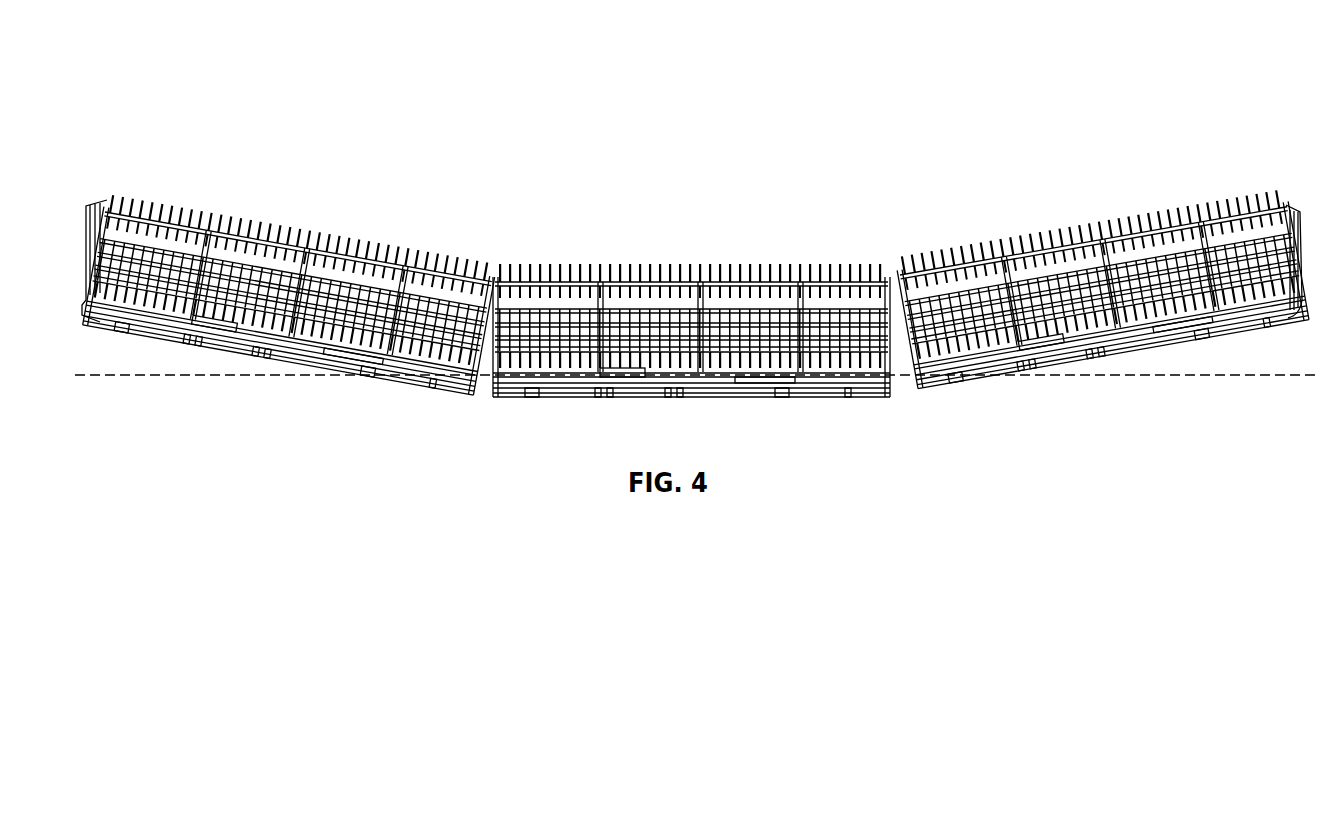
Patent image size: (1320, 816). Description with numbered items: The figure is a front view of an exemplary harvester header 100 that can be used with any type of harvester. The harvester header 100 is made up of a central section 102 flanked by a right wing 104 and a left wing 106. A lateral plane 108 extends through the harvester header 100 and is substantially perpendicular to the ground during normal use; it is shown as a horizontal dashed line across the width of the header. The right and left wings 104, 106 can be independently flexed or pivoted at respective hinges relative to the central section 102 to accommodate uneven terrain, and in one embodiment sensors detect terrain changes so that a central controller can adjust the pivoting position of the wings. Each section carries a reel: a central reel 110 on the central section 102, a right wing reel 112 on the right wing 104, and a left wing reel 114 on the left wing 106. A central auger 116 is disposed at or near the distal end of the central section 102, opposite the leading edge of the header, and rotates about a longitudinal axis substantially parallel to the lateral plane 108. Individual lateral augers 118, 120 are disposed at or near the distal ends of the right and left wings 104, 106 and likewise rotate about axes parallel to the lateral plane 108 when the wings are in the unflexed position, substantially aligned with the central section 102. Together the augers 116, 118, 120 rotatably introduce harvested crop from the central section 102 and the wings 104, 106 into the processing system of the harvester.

The harvester header 100 is at (908, 62).
The central section 102 is at (710, 193).
The right wing 104 is at (318, 188).
The left wing 106 is at (1080, 176).
The lateral plane 108 is at (1290, 376).
The central reel 110 is at (544, 268).
The right wing reel 112 is at (162, 208).
The left wing reel 114 is at (975, 262).
The central auger 116 is at (712, 336).
The lateral auger 118 is at (358, 293).
The lateral auger 120 is at (1150, 297).